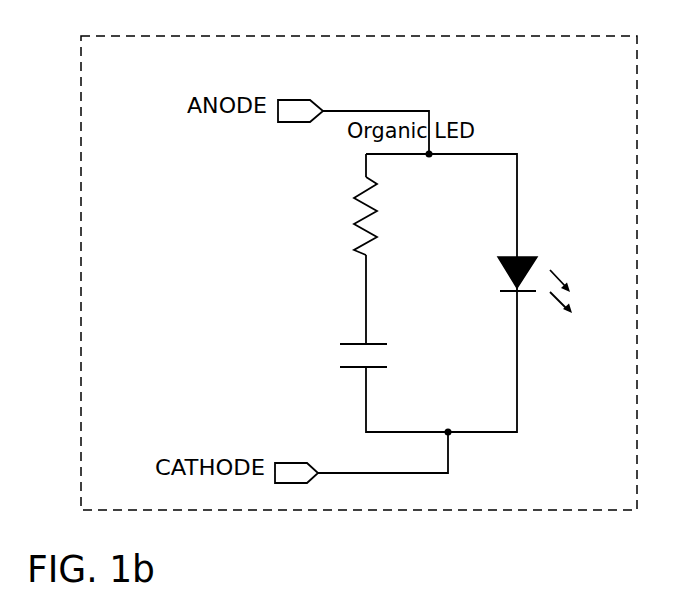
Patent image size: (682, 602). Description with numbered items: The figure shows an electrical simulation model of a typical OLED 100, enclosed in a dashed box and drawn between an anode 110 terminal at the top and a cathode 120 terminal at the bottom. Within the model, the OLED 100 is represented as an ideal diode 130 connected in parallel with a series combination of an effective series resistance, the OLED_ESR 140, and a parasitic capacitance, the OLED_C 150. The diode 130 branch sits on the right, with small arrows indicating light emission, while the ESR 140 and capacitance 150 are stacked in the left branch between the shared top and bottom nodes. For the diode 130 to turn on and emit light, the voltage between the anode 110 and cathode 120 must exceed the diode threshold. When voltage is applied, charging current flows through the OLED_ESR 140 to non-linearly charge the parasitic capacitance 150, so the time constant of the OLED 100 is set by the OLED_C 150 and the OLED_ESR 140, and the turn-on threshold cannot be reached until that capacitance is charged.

The OLED 100 is at (143, 71).
The anode 110 is at (284, 100).
The cathode 120 is at (283, 462).
The ideal diode 130 is at (552, 232).
The ESR 140 is at (358, 222).
The parasitic capacitance 150 is at (345, 343).